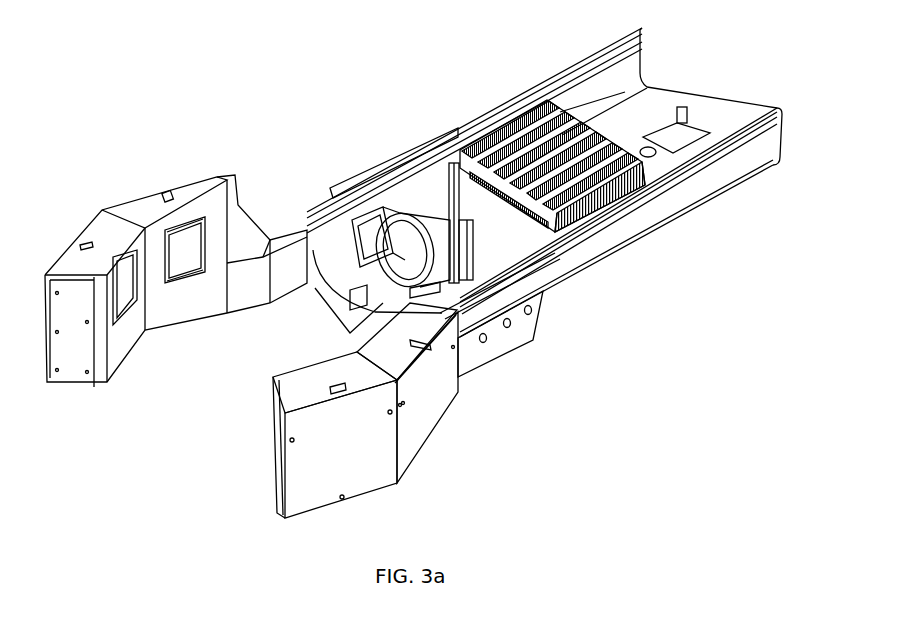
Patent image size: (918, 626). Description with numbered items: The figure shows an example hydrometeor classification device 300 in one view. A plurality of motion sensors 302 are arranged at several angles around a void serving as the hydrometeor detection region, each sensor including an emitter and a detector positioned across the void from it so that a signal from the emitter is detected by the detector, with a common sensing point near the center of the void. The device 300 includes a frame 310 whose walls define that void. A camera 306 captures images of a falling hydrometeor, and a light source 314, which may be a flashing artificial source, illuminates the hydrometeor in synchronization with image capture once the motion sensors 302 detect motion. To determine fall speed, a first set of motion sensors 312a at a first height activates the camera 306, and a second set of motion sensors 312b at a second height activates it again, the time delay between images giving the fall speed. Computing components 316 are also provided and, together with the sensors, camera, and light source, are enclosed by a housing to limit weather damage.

The hydrometeor classification device 300 is at (155, 60).
The motion sensors 302 is at (123, 277).
The first set of motion sensors 312a is at (192, 222).
The second set of motion sensors 312b is at (188, 275).
The light source 314 is at (367, 212).
The camera 306 is at (420, 230).
The computing components 316 is at (541, 228).
The frame 310 is at (463, 383).